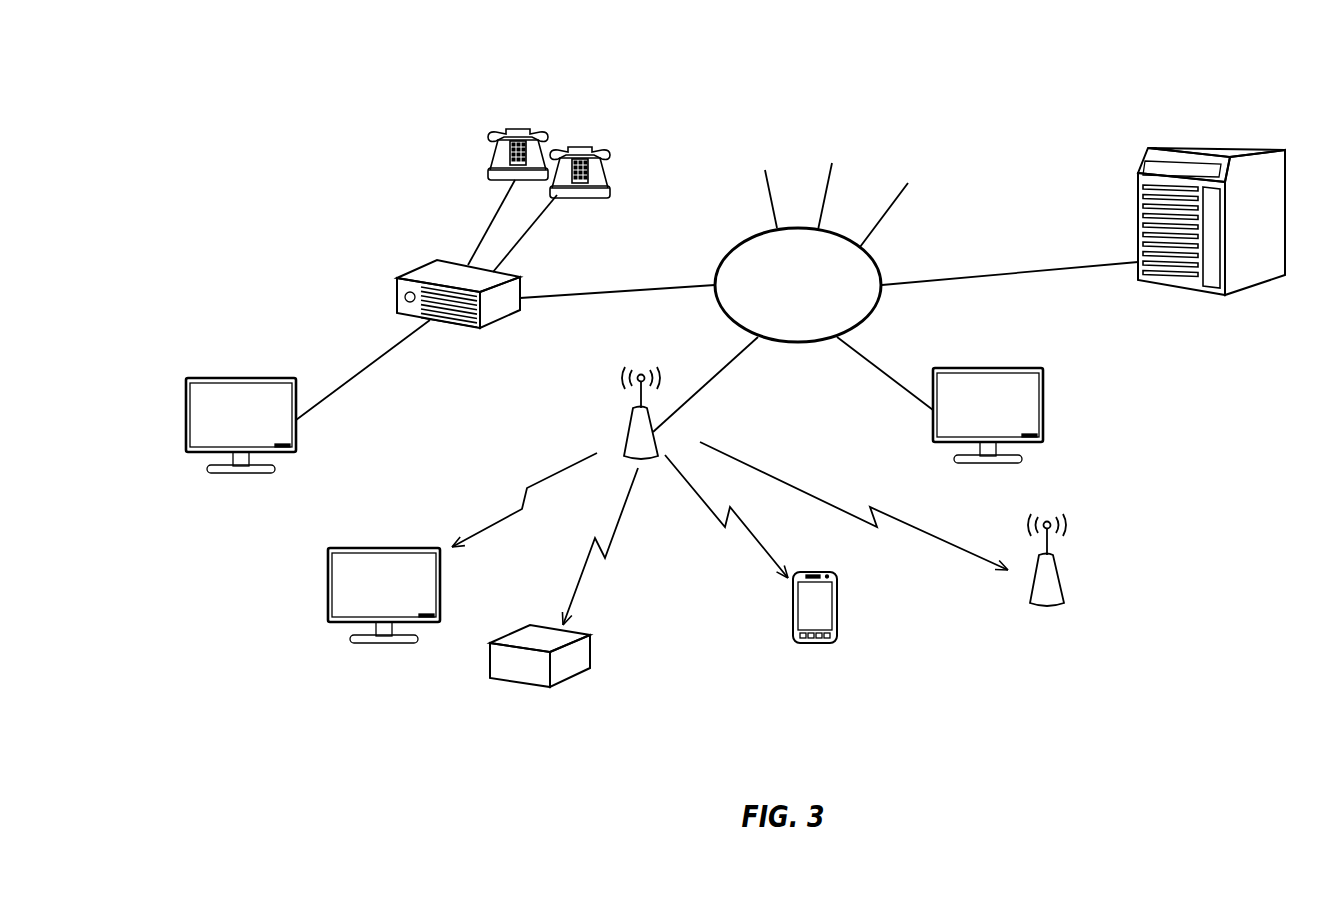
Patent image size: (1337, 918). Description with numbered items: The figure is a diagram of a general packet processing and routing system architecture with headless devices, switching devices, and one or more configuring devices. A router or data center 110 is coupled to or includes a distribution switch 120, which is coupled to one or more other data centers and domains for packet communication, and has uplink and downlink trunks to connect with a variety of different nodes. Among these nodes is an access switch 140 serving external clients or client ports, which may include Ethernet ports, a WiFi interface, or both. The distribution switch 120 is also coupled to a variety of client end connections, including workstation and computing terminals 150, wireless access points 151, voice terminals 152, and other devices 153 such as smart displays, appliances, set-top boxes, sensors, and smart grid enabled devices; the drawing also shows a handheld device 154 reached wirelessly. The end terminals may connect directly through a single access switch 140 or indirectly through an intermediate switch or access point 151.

The router or data center 110 is at (1233, 147).
The distribution switch 120 is at (781, 313).
The access switch 140 is at (412, 275).
The computing terminal 150 is at (218, 378).
The wireless access point 151 is at (632, 437).
The voice terminal 152 is at (560, 126).
The other device 153 is at (572, 668).
The mobile phone 154 is at (837, 628).